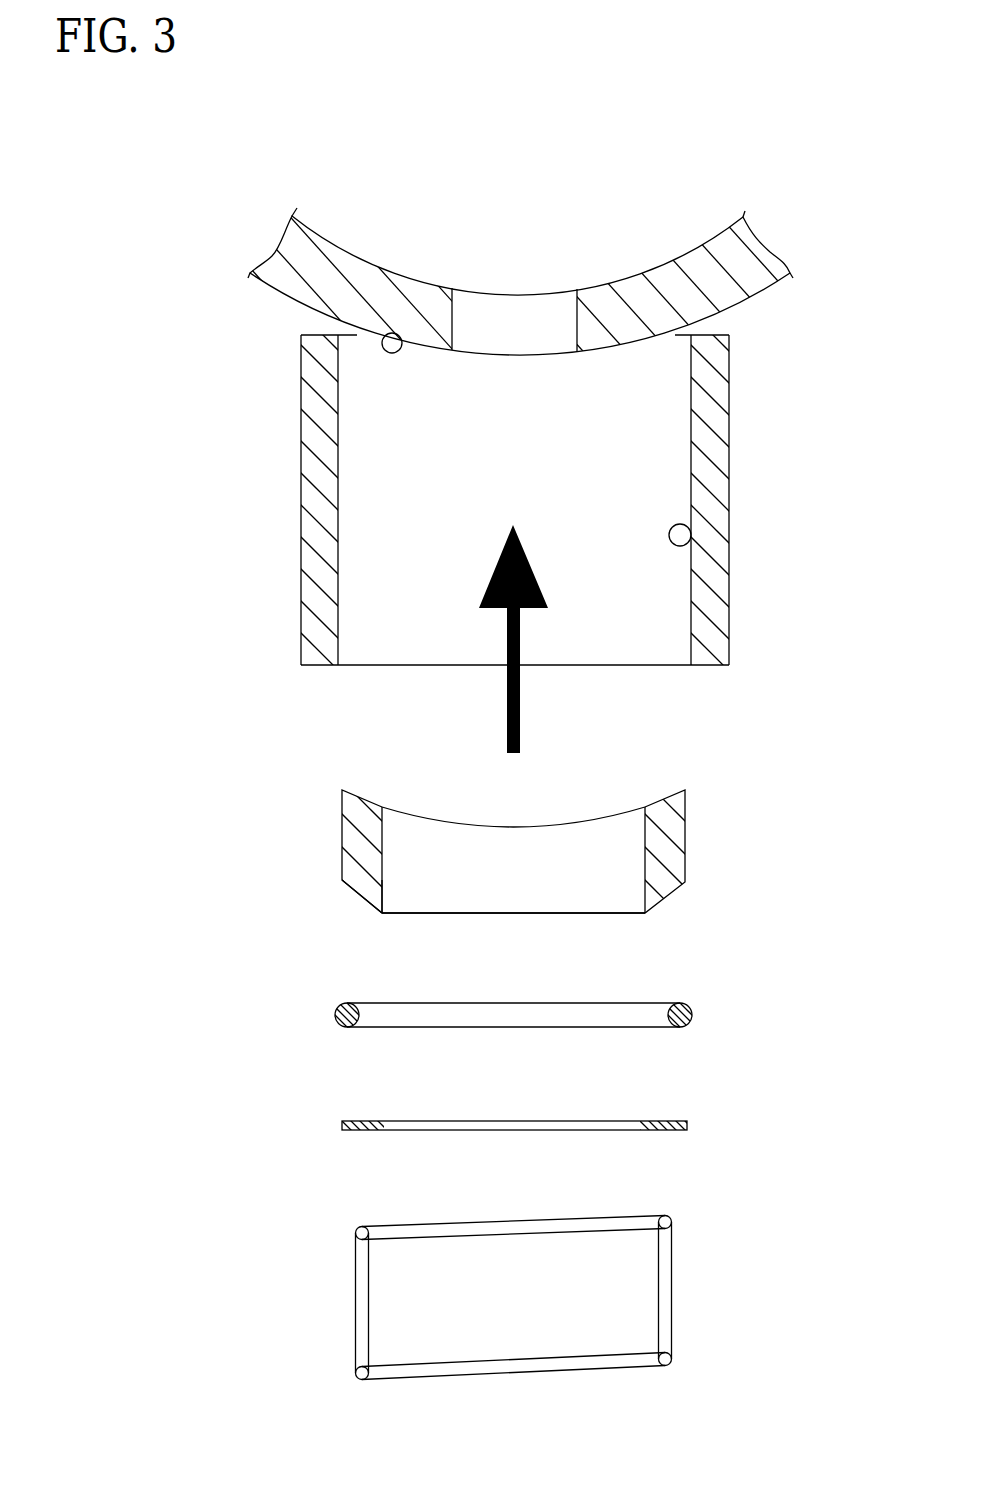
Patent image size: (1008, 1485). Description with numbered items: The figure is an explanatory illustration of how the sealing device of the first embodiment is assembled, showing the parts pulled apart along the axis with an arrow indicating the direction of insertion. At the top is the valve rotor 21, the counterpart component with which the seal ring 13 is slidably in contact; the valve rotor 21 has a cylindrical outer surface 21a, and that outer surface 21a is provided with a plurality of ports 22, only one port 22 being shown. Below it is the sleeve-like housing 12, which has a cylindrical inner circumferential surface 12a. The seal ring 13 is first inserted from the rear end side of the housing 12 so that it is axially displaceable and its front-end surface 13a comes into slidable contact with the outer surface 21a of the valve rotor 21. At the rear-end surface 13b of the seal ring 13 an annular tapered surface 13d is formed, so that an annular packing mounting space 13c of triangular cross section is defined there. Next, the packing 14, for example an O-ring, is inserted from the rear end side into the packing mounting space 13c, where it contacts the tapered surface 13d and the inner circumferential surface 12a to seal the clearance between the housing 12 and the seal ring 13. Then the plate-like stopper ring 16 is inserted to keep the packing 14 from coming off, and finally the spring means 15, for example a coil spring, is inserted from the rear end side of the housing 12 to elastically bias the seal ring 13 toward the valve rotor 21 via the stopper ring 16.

The housing 12 is at (715, 450).
The inner circumferential surface 12a is at (692, 540).
The seal ring 13 is at (501, 834).
The front-end surface 13a is at (372, 800).
The rear-end surface 13b is at (380, 917).
The packing mounting space 13c is at (368, 905).
The tapered surface 13d is at (352, 888).
The packing 14 is at (692, 1013).
The spring means 15 is at (667, 1285).
The stopper ring 16 is at (687, 1126).
The valve rotor 21 is at (290, 257).
The outer surface 21a is at (404, 334).
The port 22 is at (522, 317).